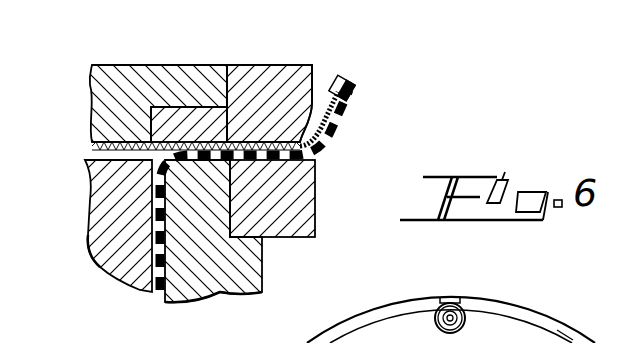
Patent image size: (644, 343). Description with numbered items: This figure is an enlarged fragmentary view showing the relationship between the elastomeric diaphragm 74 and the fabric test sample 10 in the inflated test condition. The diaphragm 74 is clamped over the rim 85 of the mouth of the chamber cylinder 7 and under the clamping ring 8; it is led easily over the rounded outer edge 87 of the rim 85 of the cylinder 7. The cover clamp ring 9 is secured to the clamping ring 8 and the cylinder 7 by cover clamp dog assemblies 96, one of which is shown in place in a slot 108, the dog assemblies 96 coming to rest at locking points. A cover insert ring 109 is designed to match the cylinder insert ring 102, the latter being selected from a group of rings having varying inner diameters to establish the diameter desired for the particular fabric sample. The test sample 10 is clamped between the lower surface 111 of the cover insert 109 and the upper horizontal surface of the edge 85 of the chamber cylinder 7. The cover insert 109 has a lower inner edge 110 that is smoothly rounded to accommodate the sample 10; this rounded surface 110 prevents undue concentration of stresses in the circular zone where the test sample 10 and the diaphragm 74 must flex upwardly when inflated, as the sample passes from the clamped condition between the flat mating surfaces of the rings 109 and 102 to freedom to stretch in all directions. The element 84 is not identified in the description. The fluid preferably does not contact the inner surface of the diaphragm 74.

The chamber cylinder 7 is at (213, 278).
The clamping ring 8 is at (142, 263).
The cover clamp ring 9 is at (138, 71).
The test sample 10 is at (130, 150).
The diaphragm 74 is at (345, 108).
The wheel rim 84 is at (285, 342).
The rim 85 is at (104, 270).
The rounded outer edge 87 is at (158, 222).
The dog assemblies 96 is at (462, 312).
The insert ring 102 is at (302, 193).
The slot 108 is at (443, 302).
The cover insert ring 109 is at (253, 75).
The lower inner edge 110 is at (315, 107).
The lower surface 111 is at (207, 103).